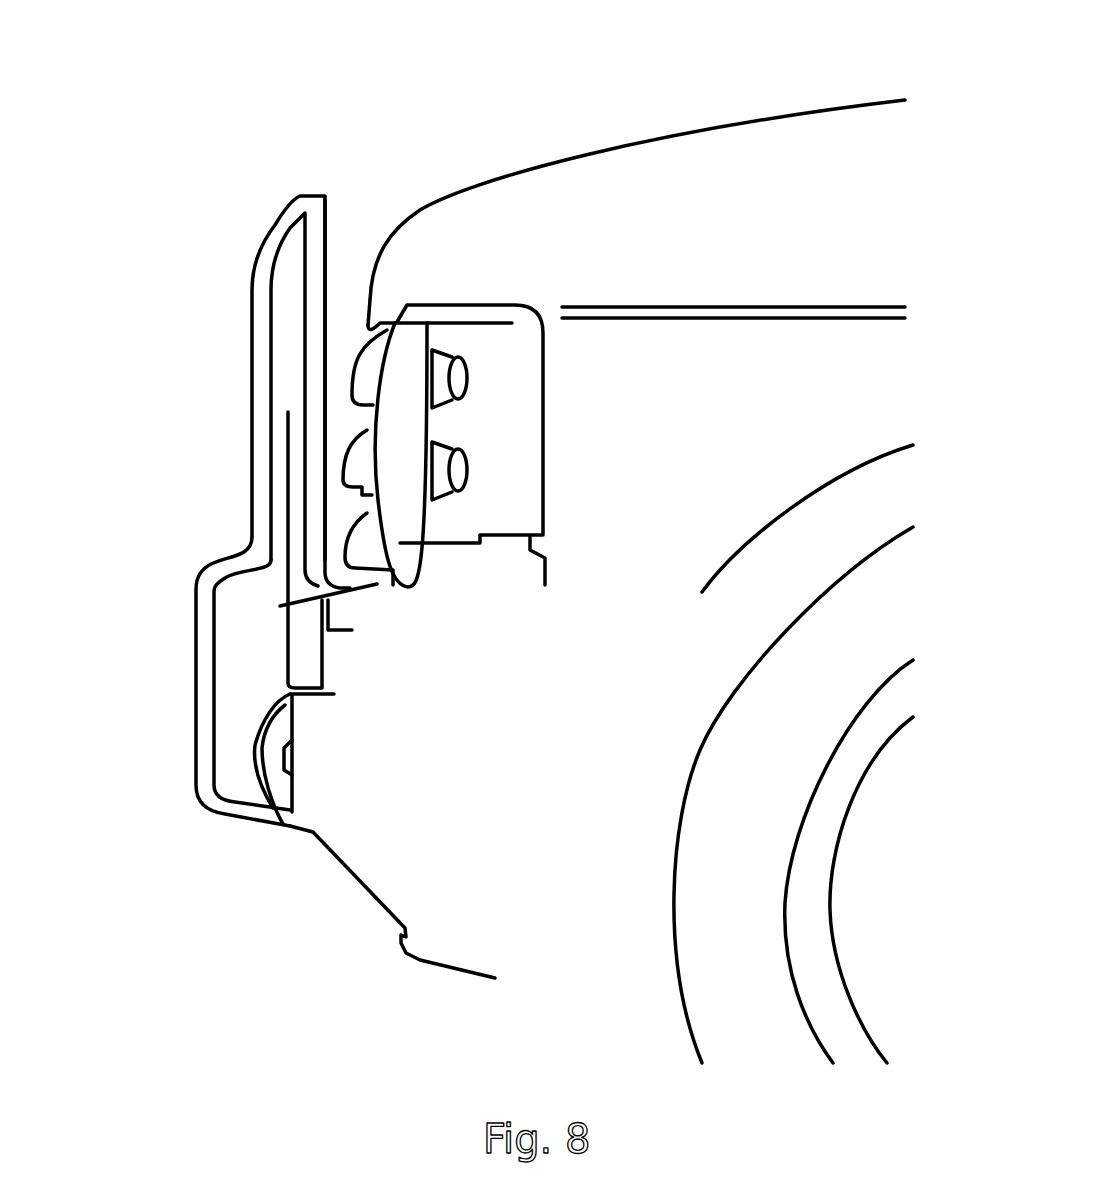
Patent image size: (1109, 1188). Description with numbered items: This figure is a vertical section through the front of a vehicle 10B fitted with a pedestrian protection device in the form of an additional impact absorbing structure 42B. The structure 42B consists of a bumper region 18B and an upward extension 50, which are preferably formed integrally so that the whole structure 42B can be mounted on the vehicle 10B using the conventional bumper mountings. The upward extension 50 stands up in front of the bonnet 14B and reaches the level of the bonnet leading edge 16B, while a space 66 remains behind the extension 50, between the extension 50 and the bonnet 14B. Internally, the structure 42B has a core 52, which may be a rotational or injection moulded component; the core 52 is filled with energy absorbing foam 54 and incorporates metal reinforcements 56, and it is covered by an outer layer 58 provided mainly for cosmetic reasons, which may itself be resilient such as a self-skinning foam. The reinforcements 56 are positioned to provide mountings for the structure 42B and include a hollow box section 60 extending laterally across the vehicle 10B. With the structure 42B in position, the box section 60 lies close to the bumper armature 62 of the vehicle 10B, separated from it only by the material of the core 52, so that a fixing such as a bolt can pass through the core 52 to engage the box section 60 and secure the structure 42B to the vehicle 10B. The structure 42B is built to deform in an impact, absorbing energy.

The vehicle 10B is at (623, 130).
The bonnet 14B is at (548, 180).
The bonnet leading edge 16B is at (411, 211).
The bumper region 18B is at (285, 757).
The additional impact absorbing structure 42B is at (253, 462).
The upward extension 50 is at (252, 450).
The core 52 is at (207, 685).
The energy absorbing foam 54 is at (227, 710).
The metal reinforcements 56 is at (286, 507).
The outer layer 58 is at (205, 640).
The hollow box section 60 is at (323, 667).
The bumper armature 62 is at (337, 632).
The space 66 is at (348, 213).